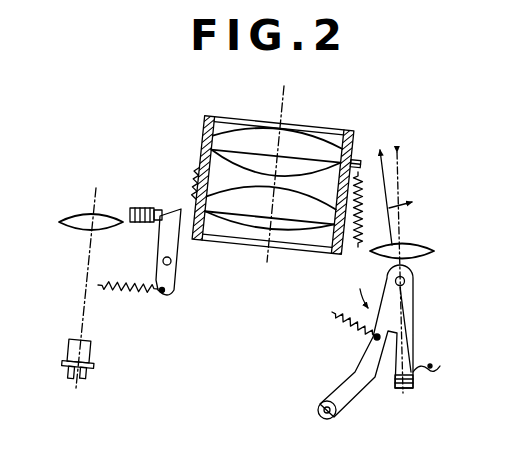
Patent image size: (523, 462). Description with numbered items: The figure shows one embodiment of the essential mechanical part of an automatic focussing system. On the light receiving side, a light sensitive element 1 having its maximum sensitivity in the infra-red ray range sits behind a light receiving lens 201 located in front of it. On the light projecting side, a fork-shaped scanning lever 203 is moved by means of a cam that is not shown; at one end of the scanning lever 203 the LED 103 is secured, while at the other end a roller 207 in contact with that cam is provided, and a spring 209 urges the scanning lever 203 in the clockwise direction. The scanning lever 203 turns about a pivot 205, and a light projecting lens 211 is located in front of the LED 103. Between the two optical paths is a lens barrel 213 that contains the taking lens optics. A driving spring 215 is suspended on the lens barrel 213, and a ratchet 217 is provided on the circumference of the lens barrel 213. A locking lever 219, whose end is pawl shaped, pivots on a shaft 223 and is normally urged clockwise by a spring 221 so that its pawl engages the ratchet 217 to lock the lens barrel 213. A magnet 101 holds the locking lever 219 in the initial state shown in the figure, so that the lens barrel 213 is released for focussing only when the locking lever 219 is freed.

The light sensitive element 1 is at (68, 355).
The magnet 101 is at (145, 207).
The LED 103 is at (410, 368).
The light receiving lens 201 is at (78, 212).
The scanning lever 203 is at (410, 300).
The pivot pin 205 is at (405, 280).
The roller 207 is at (334, 414).
The spring 209 is at (347, 323).
The light projecting lens 211 is at (420, 245).
The lens barrel 213 is at (350, 130).
The driving spring 215 is at (363, 182).
The ratchet 217 is at (195, 175).
The locking lever 219 is at (162, 243).
The spring 221 is at (137, 298).
The shaft 223 is at (172, 262).